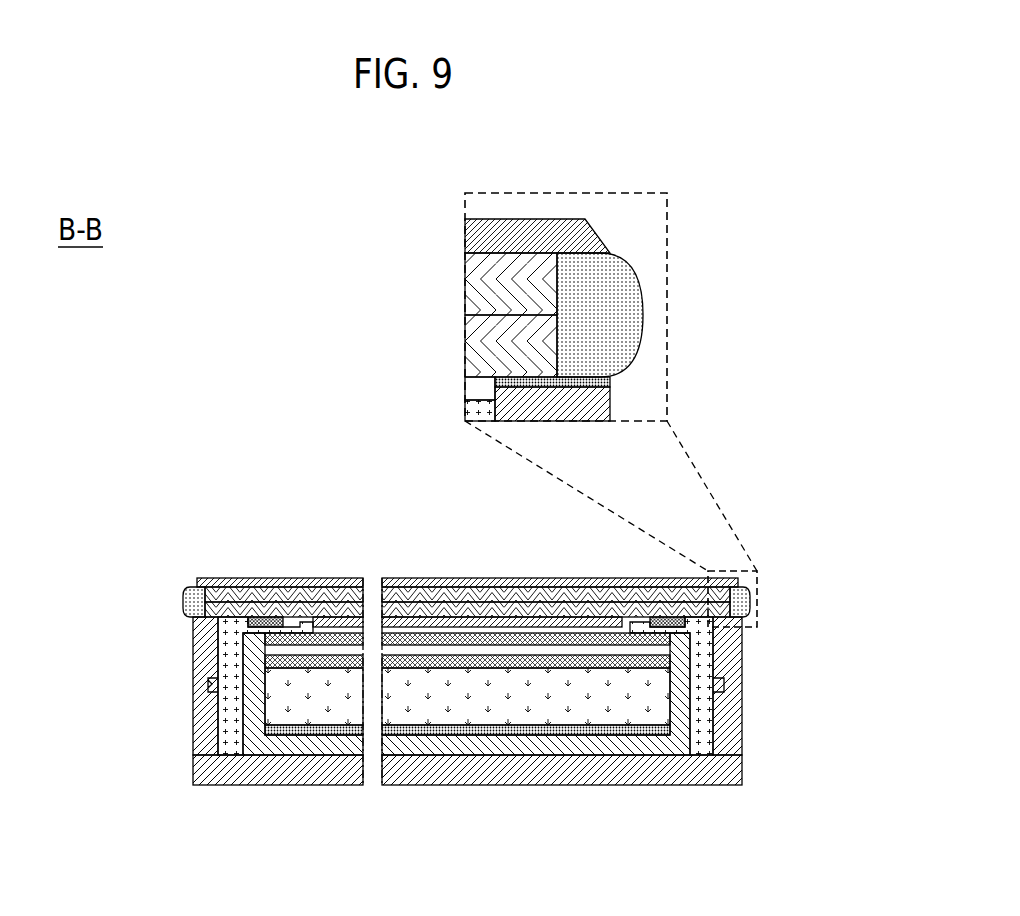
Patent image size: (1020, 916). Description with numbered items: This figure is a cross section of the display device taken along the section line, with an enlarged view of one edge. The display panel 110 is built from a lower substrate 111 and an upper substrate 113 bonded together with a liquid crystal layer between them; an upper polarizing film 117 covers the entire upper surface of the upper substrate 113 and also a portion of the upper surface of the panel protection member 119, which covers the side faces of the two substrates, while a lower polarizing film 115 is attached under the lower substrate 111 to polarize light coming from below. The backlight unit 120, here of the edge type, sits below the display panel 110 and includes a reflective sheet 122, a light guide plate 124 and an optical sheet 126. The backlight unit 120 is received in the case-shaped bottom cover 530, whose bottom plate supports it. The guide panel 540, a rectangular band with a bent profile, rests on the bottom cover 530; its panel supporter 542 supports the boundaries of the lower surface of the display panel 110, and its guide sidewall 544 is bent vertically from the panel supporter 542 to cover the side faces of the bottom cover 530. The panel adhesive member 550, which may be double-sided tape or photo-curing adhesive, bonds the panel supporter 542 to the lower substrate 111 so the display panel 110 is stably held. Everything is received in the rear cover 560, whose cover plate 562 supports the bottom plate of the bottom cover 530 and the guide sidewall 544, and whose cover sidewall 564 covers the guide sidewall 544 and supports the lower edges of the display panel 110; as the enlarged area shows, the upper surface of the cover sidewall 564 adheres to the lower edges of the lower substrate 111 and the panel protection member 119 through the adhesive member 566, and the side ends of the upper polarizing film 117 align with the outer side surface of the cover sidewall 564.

The display panel 110 is at (390, 530).
The lower substrate 111 is at (470, 347).
The upper substrate 113 is at (472, 288).
The lower polarizing film 115 is at (395, 622).
The upper polarizing film 117 is at (472, 240).
The panel protection member 119 is at (620, 316).
The backlight unit 120 is at (505, 830).
The reflective sheet 122 is at (425, 736).
The light guide plate 124 is at (462, 705).
The optical sheet 126 is at (523, 643).
The bottom cover 530 is at (305, 745).
The guide panel 540 is at (465, 409).
The panel supporter 542 is at (273, 629).
The guide sidewall 544 is at (232, 659).
The panel adhesive member 550 is at (668, 624).
The rear cover 560 is at (95, 722).
The cover plate 562 is at (234, 780).
The cover sidewall 564 is at (590, 415).
The adhesive member 566 is at (612, 382).